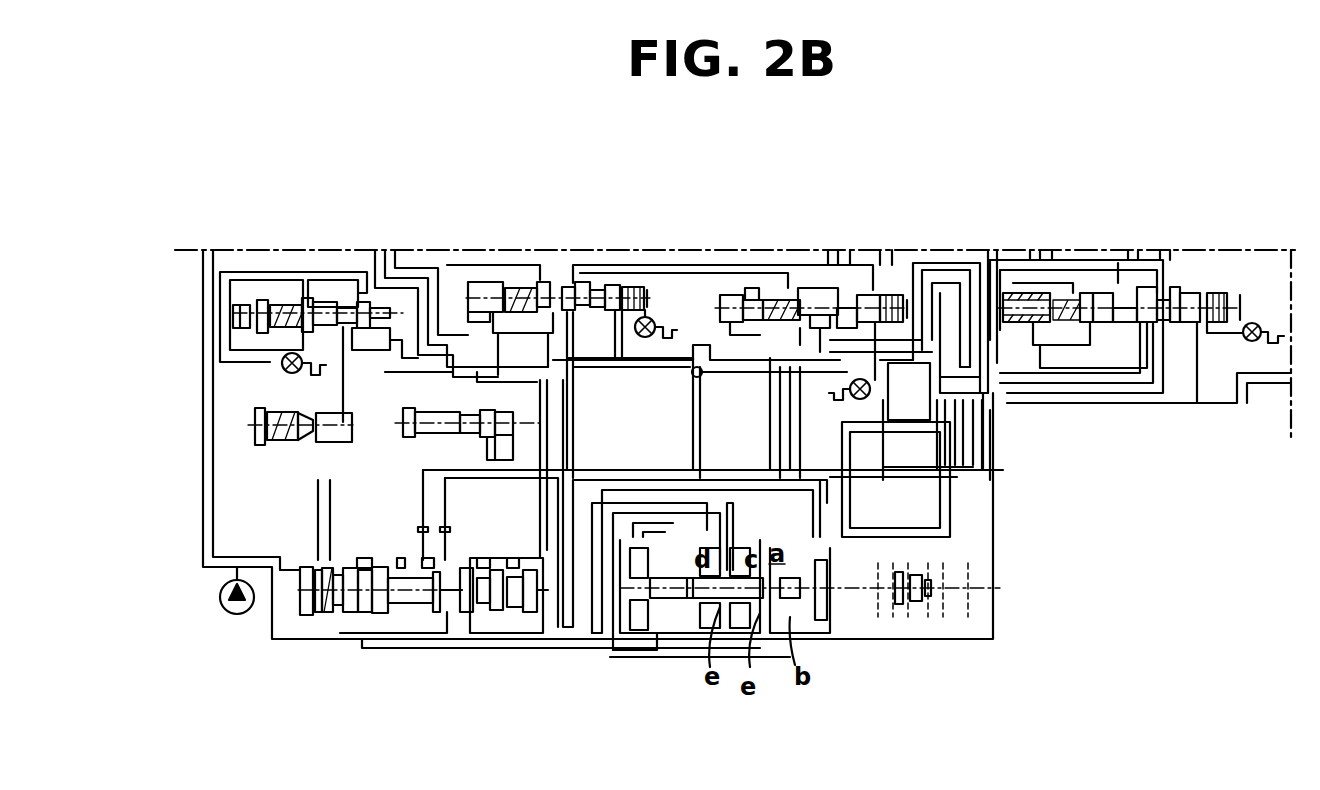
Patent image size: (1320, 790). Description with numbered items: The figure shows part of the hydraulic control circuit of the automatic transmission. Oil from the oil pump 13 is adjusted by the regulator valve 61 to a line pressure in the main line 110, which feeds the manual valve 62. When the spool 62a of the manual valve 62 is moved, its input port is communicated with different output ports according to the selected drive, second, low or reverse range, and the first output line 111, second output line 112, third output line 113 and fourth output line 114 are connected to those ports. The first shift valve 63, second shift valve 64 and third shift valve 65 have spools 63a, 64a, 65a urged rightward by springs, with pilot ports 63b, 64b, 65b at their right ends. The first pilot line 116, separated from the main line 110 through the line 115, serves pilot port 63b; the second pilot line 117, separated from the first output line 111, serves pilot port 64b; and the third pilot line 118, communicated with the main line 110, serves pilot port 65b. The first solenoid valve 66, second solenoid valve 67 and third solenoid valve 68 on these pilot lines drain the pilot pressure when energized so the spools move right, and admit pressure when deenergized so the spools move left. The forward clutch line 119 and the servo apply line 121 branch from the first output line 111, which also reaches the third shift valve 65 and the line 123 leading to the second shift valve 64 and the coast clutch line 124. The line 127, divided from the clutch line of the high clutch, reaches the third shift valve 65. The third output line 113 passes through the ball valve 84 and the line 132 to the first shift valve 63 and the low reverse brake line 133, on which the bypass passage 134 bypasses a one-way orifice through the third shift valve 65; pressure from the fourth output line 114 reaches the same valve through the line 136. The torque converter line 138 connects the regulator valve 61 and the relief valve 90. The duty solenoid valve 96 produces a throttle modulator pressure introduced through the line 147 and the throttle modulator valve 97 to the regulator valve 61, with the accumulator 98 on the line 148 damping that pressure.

The oil pump 13 is at (237, 614).
The regulator valve 61 is at (483, 560).
The manual valve 62 is at (917, 610).
The spool 62a is at (642, 653).
The 1-2 shift valve 63 is at (669, 262).
The spool 63a is at (572, 257).
The pilot port 63b is at (610, 257).
The 2-3 shift valve 64 is at (885, 346).
The spool 64a is at (770, 257).
The pilot port 64b is at (900, 340).
The 3-4 shift valve 65 is at (1119, 320).
The spool 65a is at (1182, 257).
The pilot port 65b is at (1197, 337).
The 1-2 solenoid valve 66 is at (655, 320).
The 2-3 solenoid valve 67 is at (847, 405).
The 3-4 solenoid valve 68 is at (1253, 258).
The ball valve 84 is at (710, 377).
The relief valve 90 is at (440, 434).
The second duty solenoid valve 96 is at (283, 371).
The throttle modulator valve 97 is at (318, 288).
The accumulator 98 is at (297, 443).
The main line 110 is at (201, 438).
The first output line 111 is at (790, 503).
The second output line 112 is at (817, 450).
The third output line 113 is at (660, 527).
The fourth output line 114 is at (825, 560).
The line 115 is at (577, 457).
The first pilot line 116 is at (633, 355).
The second pilot line 117 is at (893, 345).
The third pilot line 118 is at (1218, 357).
The forward clutch line 119 is at (1013, 360).
The servo apply line 121 is at (485, 257).
The line 123 is at (943, 257).
The coast clutch line 124 is at (828, 272).
The line 127 is at (1068, 343).
The line 132 is at (597, 365).
The low reverse brake line 133 is at (752, 262).
The bypass passage 134 is at (1060, 262).
The line 136 is at (773, 360).
The torque converter line 138 is at (1125, 408).
The line 147 is at (432, 257).
The line 148 is at (330, 520).